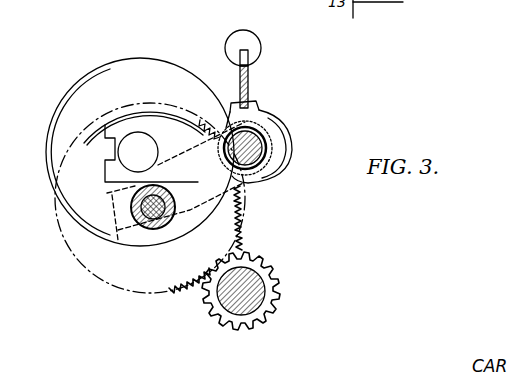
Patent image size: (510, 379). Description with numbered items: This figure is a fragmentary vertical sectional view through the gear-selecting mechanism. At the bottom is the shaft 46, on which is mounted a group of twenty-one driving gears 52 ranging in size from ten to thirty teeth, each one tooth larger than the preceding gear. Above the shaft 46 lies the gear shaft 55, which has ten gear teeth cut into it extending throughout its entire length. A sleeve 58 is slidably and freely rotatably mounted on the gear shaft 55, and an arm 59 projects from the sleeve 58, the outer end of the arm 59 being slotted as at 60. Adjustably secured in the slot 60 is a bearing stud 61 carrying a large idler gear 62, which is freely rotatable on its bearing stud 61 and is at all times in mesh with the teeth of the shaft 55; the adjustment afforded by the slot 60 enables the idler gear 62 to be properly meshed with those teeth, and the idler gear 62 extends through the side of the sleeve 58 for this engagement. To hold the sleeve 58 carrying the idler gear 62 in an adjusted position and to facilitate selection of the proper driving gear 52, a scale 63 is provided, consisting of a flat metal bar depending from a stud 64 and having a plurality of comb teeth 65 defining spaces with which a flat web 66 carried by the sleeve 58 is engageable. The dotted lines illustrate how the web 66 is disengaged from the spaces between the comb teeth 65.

The shaft 46 is at (242, 308).
The driving gears 52 is at (256, 262).
The gear shaft 55 is at (290, 151).
The sleeve 58 is at (262, 135).
The arm 59 is at (112, 121).
The slot 60 is at (93, 150).
The bearing stud 61 is at (155, 210).
The idler gear 62 is at (121, 62).
The scale 63 is at (249, 78).
The stud 64 is at (248, 35).
The comb teeth 65 is at (256, 101).
The flat web 66 is at (239, 98).